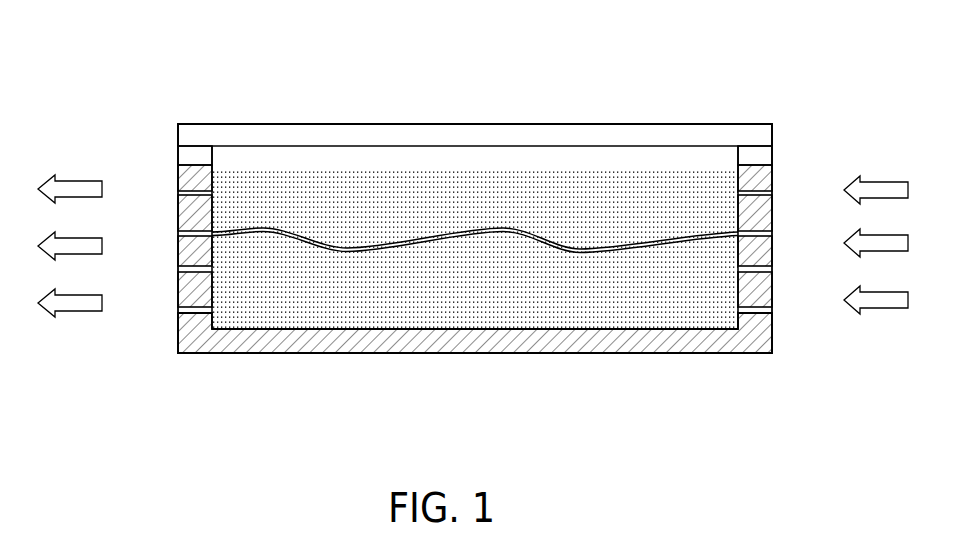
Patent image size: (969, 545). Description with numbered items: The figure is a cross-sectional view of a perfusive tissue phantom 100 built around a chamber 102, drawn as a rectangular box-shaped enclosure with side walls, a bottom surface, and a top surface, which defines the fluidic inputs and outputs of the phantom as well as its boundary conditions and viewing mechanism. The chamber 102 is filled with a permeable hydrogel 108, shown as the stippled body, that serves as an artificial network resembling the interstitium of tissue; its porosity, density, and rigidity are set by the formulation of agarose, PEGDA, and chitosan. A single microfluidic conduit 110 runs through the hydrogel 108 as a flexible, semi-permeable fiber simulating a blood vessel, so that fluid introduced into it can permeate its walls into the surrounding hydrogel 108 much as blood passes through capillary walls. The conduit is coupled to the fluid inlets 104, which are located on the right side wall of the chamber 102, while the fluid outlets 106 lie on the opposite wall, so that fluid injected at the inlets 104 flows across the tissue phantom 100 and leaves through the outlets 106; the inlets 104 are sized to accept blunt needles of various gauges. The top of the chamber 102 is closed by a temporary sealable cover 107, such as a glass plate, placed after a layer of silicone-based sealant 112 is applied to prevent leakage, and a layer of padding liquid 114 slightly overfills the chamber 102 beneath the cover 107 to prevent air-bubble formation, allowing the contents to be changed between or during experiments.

The perfusive tissue phantom 100 is at (195, 50).
The chamber 102 is at (655, 355).
The fluid inlets 104 is at (776, 193).
The fluid outlets 106 is at (167, 240).
The temporary sealable cover 107 is at (638, 123).
The permeable hydrogel 108 is at (370, 310).
The microfluidic conduit 110 is at (470, 225).
The silicone-based sealant 112 is at (188, 157).
The padding liquid 114 is at (408, 155).